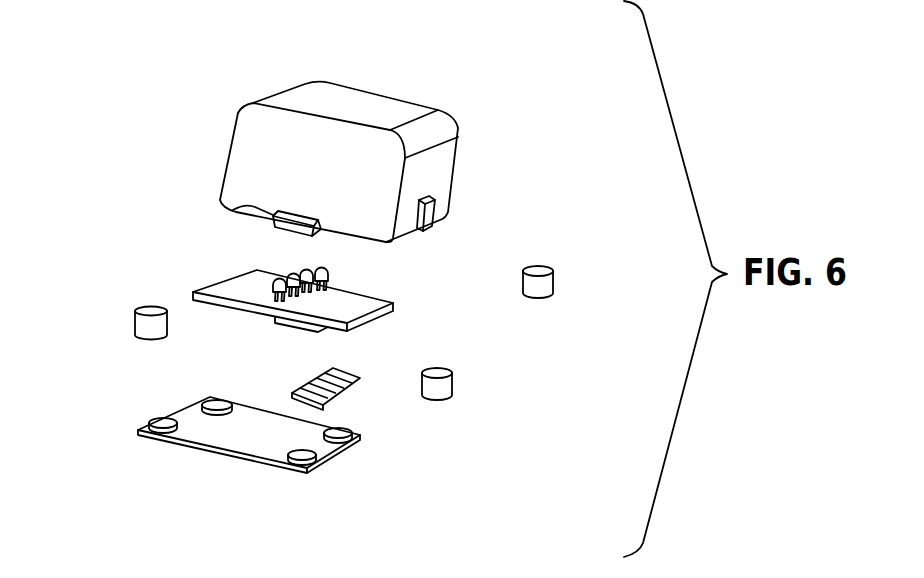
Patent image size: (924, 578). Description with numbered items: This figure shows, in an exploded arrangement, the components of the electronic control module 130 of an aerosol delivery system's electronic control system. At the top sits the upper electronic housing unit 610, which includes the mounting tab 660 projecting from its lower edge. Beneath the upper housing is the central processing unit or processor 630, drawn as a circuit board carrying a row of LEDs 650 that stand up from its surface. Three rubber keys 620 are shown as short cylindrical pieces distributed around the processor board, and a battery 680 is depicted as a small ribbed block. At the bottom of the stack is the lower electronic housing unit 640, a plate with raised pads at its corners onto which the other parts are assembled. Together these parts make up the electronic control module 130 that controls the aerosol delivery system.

The electronic control module 130 is at (482, 82).
The upper electronic housing unit 610 is at (363, 90).
The rubber keys 620 is at (128, 325).
The processor 630 is at (383, 287).
The lower electronic housing unit 640 is at (275, 470).
The LEDs 650 is at (285, 268).
The mounting tab 660 is at (221, 212).
The battery 680 is at (350, 395).